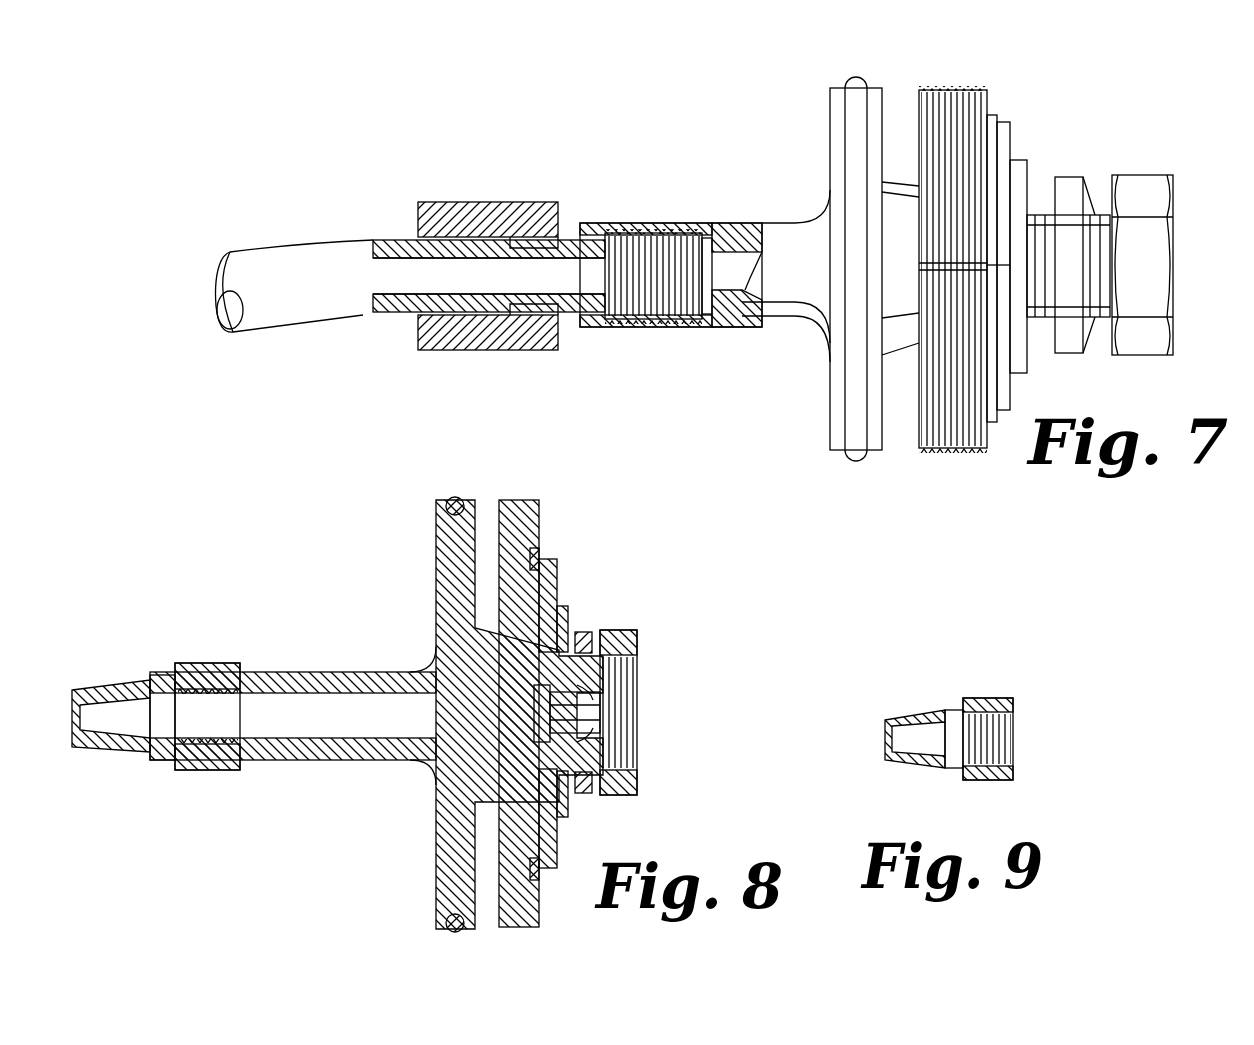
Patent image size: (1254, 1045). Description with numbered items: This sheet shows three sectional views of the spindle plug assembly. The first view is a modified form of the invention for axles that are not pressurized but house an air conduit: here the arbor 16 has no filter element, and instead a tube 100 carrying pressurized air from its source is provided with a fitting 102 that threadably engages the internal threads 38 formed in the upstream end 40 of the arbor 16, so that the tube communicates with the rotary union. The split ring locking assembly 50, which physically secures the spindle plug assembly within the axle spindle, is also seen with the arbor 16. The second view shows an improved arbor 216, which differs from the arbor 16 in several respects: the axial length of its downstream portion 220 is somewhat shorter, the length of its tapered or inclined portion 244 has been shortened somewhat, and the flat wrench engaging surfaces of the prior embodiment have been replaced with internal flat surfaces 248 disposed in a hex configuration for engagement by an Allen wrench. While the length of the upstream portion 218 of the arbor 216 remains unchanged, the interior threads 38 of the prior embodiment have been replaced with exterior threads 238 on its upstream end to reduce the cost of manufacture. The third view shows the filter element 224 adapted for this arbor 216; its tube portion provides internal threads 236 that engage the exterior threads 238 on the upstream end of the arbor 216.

In FIG. 7, the arbor 16 is at (703, 120).
In FIG. 7, the internal threads 38 is at (660, 240).
In FIG. 7, the upstream end 40 is at (573, 317).
In FIG. 7, the split ring locking assembly 50 is at (1016, 310).
In FIG. 7, the tube 100 is at (332, 257).
In FIG. 7, the fitting 102 is at (528, 202).
In FIG. 8, the arbor 216 is at (388, 615).
In FIG. 8, the upstream portion 218 is at (355, 760).
In FIG. 8, the downstream portion 220 is at (640, 667).
In FIG. 8, the filter element 224 is at (160, 666).
In FIG. 9, the filter element 224 is at (950, 700).
In FIG. 8, the internal threads 236 is at (193, 740).
In FIG. 9, the internal threads 236 is at (990, 720).
In FIG. 8, the exterior threads 238 is at (193, 683).
In FIG. 8, the tapered portion 244 is at (524, 621).
In FIG. 8, the internal flat surfaces 248 is at (595, 745).